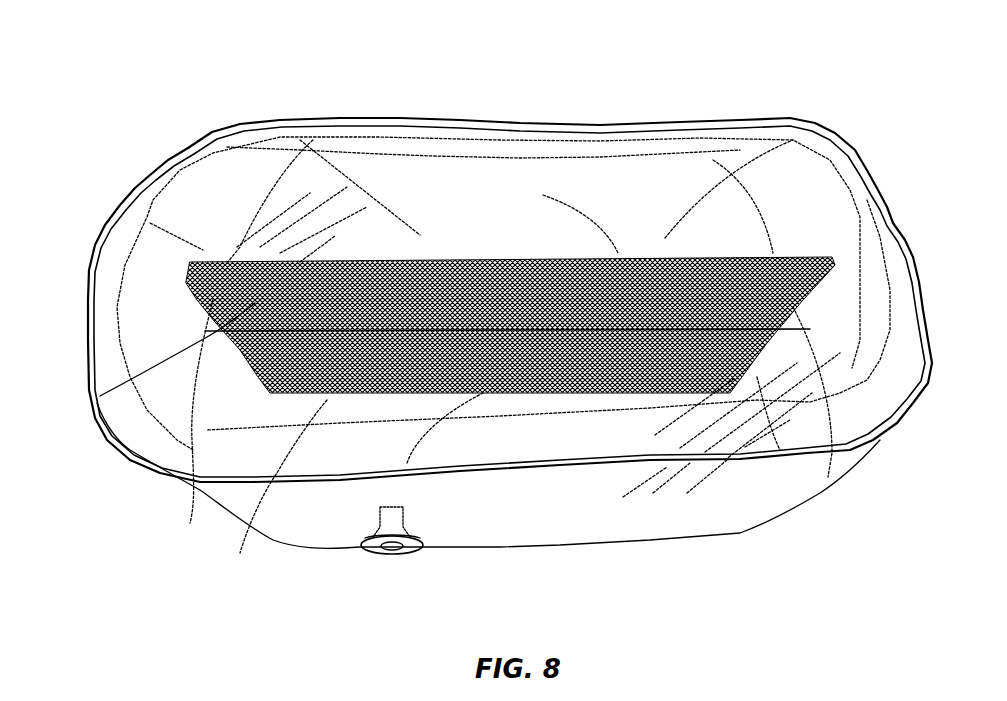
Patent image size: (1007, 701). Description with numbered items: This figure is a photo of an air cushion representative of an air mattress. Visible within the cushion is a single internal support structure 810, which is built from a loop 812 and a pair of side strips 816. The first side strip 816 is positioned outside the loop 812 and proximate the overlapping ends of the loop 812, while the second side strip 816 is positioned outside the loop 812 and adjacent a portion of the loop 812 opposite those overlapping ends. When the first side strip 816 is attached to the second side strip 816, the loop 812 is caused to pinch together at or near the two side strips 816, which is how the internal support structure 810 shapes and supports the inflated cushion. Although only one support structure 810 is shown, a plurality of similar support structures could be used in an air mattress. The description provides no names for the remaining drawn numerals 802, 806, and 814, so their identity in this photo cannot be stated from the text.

The inflatable body 802 is at (790, 120).
The inflation valve 806 is at (337, 533).
The internal support structure 810 is at (93, 400).
The loop 812 is at (488, 495).
The mesh panel 814 is at (180, 275).
The side strip 816 is at (188, 427).